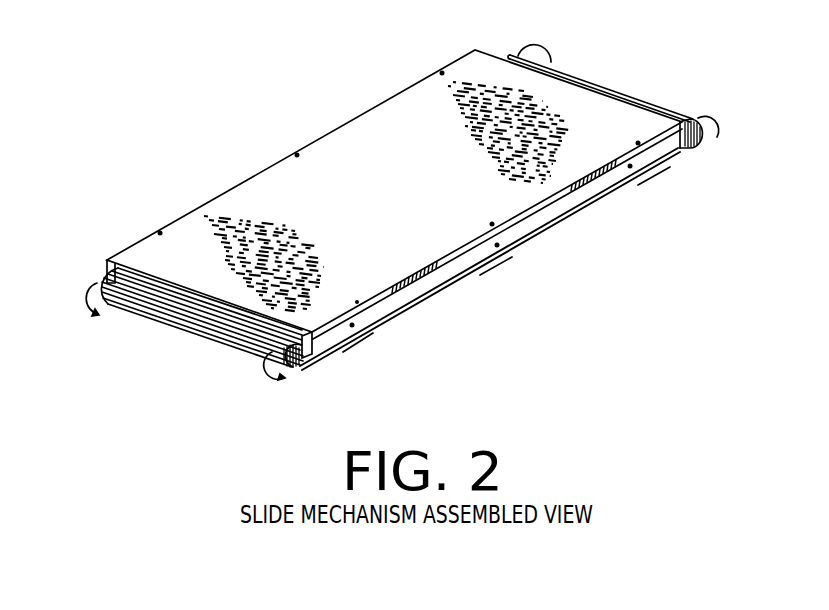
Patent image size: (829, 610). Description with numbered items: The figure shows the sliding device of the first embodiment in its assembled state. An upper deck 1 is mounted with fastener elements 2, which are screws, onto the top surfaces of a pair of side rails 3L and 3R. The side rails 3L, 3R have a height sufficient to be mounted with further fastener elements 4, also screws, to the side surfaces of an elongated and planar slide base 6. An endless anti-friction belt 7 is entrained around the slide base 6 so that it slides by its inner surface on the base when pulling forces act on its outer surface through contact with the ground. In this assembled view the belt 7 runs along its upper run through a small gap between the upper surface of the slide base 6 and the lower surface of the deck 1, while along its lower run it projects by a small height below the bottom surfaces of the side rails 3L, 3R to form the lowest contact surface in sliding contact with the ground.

The upper deck 1 is at (390, 113).
The fastener elements 2 is at (442, 73).
The left side rail 3L is at (107, 280).
The right side rail 3R is at (680, 150).
The fastener elements 4 is at (352, 325).
The slide base 6 is at (303, 368).
The endless anti-friction belt 7 is at (203, 340).